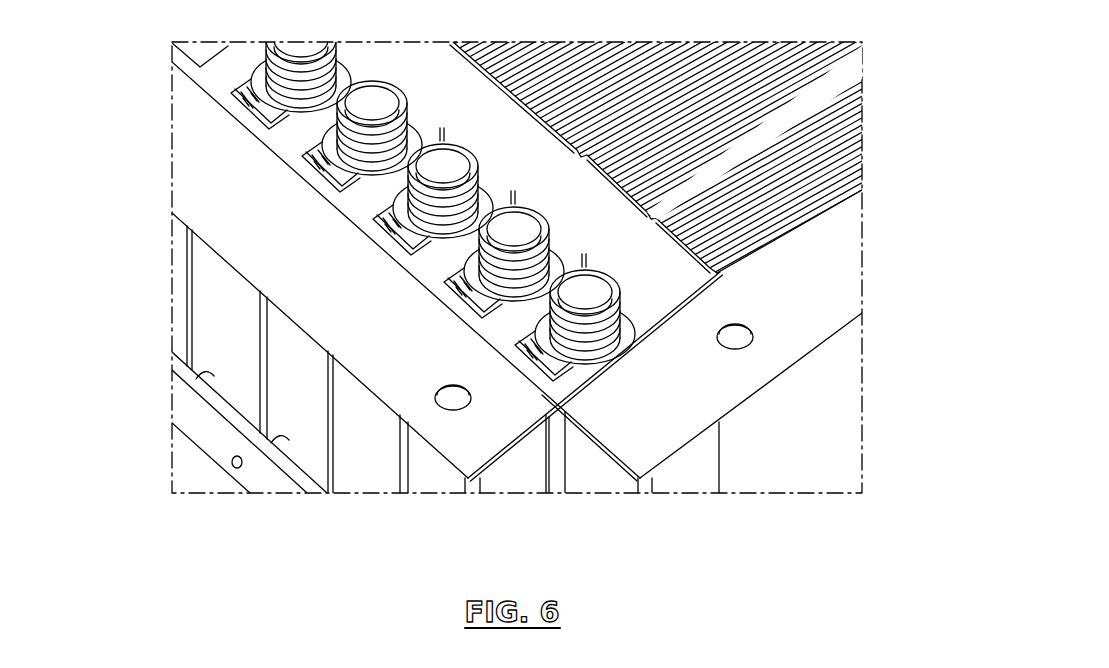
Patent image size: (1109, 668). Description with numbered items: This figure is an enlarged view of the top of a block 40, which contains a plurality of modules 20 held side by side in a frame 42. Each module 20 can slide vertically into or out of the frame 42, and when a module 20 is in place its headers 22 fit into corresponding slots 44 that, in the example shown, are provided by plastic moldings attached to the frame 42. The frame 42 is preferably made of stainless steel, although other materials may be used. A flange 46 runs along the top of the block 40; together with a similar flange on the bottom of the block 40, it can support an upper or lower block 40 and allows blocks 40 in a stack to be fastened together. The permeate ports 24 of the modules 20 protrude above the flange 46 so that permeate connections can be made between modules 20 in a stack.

The module 20 is at (848, 118).
The header 22 is at (677, 273).
The permeate port 24 is at (578, 292).
The block 40 is at (126, 142).
The frame 42 is at (656, 428).
The slot 44 is at (490, 324).
The flange 46 is at (780, 340).